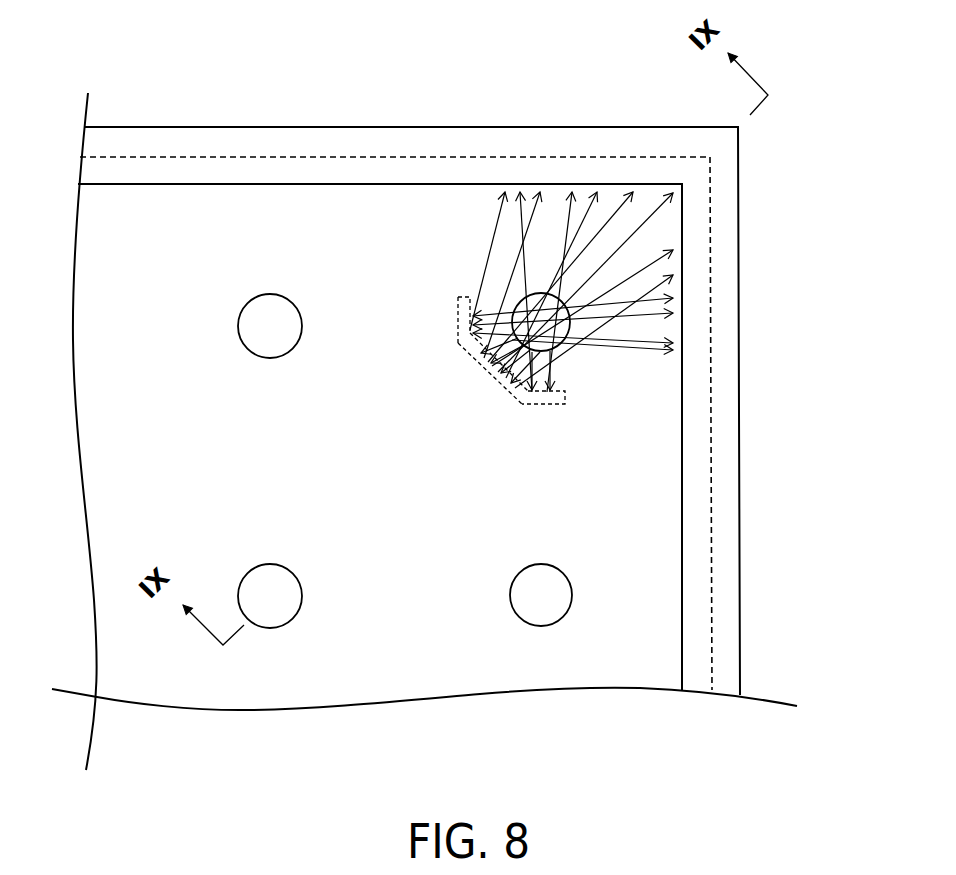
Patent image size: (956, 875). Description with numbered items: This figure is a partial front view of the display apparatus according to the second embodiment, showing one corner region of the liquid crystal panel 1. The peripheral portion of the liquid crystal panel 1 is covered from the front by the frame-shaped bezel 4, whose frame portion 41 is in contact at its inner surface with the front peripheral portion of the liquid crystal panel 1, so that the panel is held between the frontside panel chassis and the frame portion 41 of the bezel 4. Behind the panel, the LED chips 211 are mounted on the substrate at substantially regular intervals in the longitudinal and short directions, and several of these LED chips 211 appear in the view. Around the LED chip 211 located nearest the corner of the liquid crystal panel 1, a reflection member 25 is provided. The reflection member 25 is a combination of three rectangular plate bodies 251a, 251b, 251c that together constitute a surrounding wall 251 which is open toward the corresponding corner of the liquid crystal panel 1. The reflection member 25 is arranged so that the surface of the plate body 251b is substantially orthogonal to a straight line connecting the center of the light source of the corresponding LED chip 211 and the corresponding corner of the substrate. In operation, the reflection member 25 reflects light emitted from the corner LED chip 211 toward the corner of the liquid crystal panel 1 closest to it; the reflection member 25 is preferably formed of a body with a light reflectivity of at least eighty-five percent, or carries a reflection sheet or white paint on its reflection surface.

The liquid crystal panel 1 is at (712, 527).
The bezel 4 is at (345, 106).
The frame portion 41 is at (469, 133).
The LED chip 211 is at (243, 300).
The reflection member 25 is at (518, 344).
The surrounding wall 251 is at (487, 339).
The plate body 251a is at (458, 318).
The plate body 251b is at (490, 368).
The plate body 251c is at (548, 410).